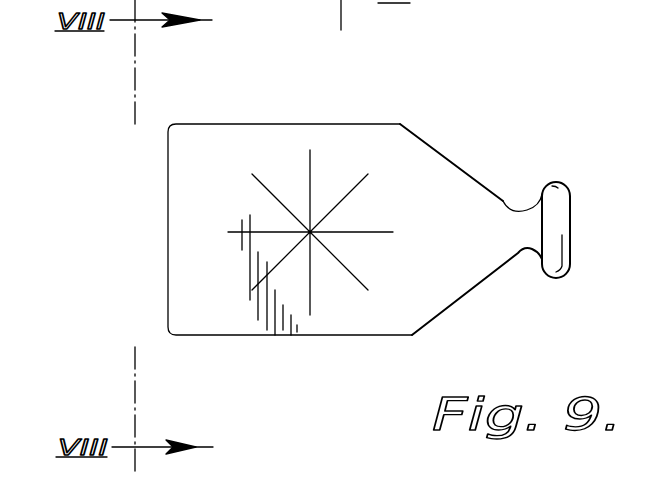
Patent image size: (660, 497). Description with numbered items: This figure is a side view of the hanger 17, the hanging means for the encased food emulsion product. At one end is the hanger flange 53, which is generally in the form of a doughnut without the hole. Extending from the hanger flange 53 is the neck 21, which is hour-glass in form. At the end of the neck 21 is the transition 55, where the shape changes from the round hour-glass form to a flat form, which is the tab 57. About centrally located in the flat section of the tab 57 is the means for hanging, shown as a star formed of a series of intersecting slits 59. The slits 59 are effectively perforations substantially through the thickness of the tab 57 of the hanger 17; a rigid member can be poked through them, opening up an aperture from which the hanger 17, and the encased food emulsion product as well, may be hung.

The hanger 17 is at (176, 204).
The neck 21 is at (522, 250).
The hanger flange 53 is at (558, 203).
The transition 55 is at (492, 222).
The tab 57 is at (397, 144).
The slits 59 is at (350, 265).